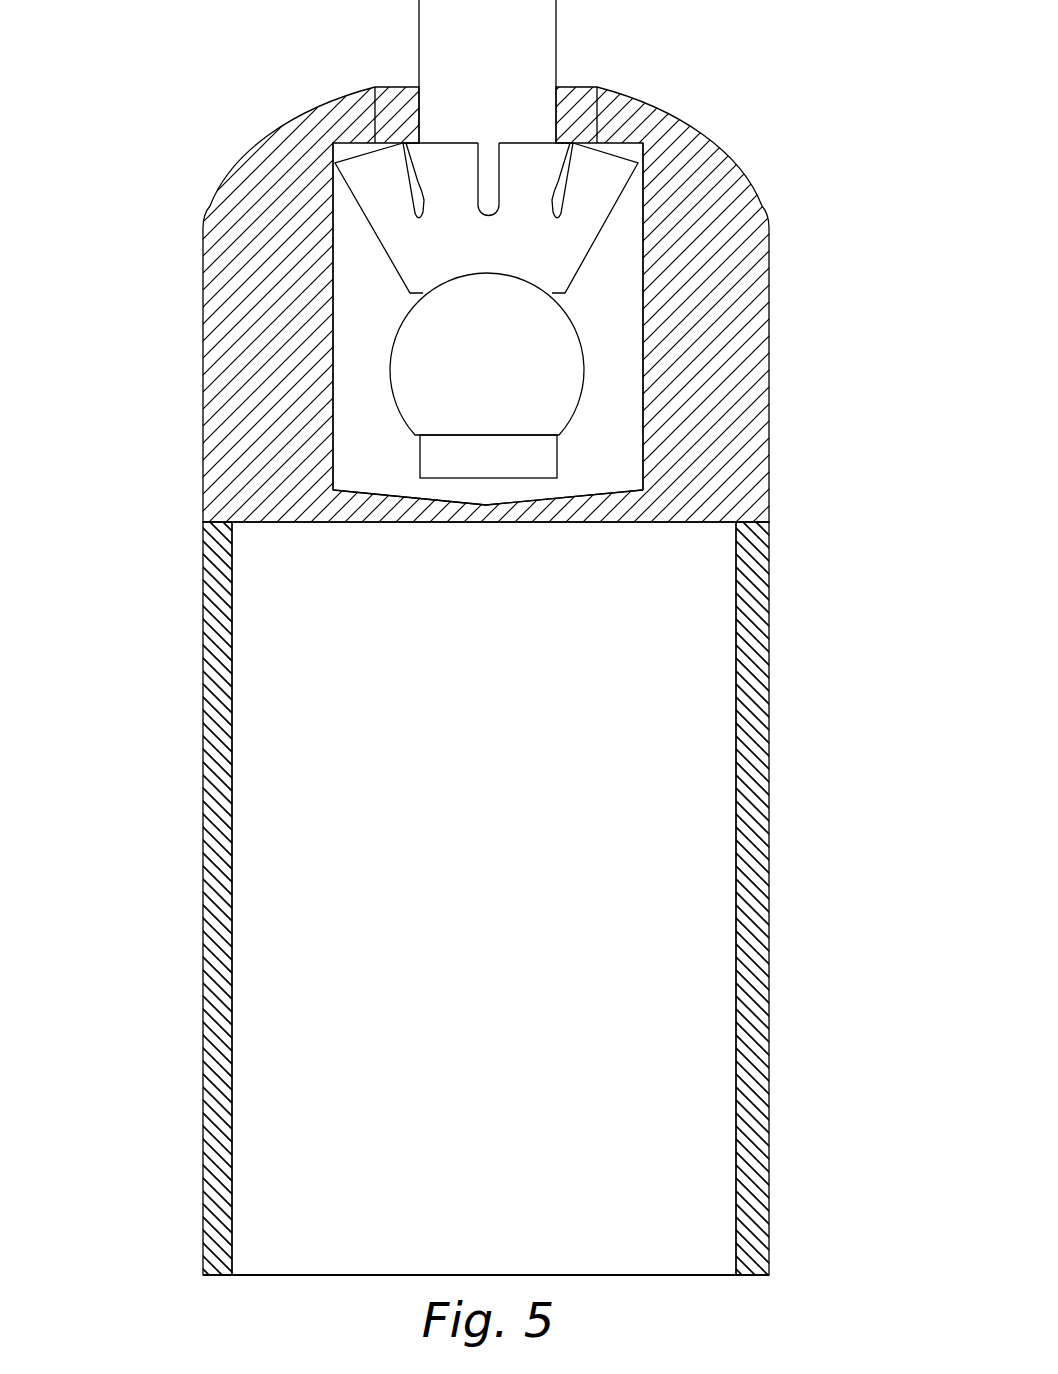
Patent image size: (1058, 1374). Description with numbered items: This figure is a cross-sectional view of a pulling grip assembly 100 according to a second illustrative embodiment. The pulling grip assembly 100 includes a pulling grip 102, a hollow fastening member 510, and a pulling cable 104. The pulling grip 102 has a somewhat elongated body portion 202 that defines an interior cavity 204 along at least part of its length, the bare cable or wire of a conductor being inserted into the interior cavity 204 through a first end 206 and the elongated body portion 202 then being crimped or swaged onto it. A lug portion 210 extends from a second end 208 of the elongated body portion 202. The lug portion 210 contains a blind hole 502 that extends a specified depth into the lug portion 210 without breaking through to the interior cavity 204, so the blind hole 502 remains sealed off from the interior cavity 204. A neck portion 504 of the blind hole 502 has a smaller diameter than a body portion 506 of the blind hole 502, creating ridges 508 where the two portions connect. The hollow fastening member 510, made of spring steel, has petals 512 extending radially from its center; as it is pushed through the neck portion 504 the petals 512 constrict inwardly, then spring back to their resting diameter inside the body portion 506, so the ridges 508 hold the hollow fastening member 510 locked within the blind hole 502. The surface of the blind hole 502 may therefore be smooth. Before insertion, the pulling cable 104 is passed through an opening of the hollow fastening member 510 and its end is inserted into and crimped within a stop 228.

The pulling grip assembly 100 is at (842, 40).
The pulling grip 102 is at (185, 642).
The pulling cable 104 is at (557, 33).
The elongated body portion 202 is at (760, 719).
The interior cavity 204 is at (672, 895).
The first end 206 is at (772, 1265).
The second end 208 is at (770, 533).
The lug portion 210 is at (215, 308).
The stop 228 is at (558, 396).
The blind hole 502 is at (643, 252).
The neck portion 504 is at (378, 98).
The body portion 506 is at (612, 322).
The ridges 508 is at (398, 170).
The hollow fastening member 510 is at (375, 214).
The petals 512 is at (610, 172).